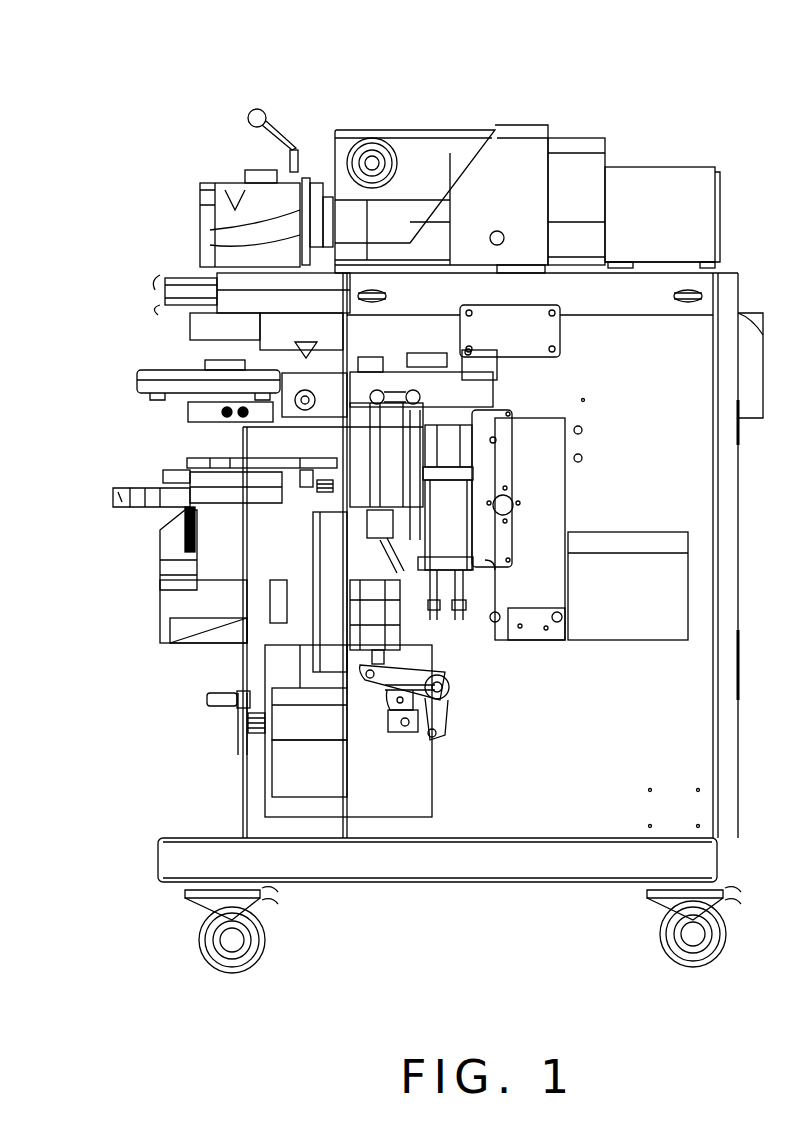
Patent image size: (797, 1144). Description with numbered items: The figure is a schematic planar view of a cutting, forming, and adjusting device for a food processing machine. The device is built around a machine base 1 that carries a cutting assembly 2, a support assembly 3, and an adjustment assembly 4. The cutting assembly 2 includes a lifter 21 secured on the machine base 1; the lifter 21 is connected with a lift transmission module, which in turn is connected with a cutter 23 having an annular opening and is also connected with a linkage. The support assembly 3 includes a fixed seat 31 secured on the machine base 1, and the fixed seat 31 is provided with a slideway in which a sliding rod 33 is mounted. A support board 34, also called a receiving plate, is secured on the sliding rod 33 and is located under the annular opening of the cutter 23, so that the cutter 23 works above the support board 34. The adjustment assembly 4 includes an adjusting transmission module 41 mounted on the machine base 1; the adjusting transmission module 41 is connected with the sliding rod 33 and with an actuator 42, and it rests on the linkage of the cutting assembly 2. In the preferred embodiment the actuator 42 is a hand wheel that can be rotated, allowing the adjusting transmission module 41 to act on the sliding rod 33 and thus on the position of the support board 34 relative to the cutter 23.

The machine base 1 is at (652, 327).
The cutting assembly 2 is at (628, 968).
The lifter 21 is at (448, 612).
The cutter 23 is at (137, 373).
The support assembly 3 is at (40, 695).
The fixed seat 31 is at (333, 562).
The sliding rod 33 is at (320, 492).
The support board 34 is at (188, 455).
The adjustment assembly 4 is at (338, 965).
The adjusting transmission module 41 is at (413, 727).
The actuator 42 is at (207, 700).